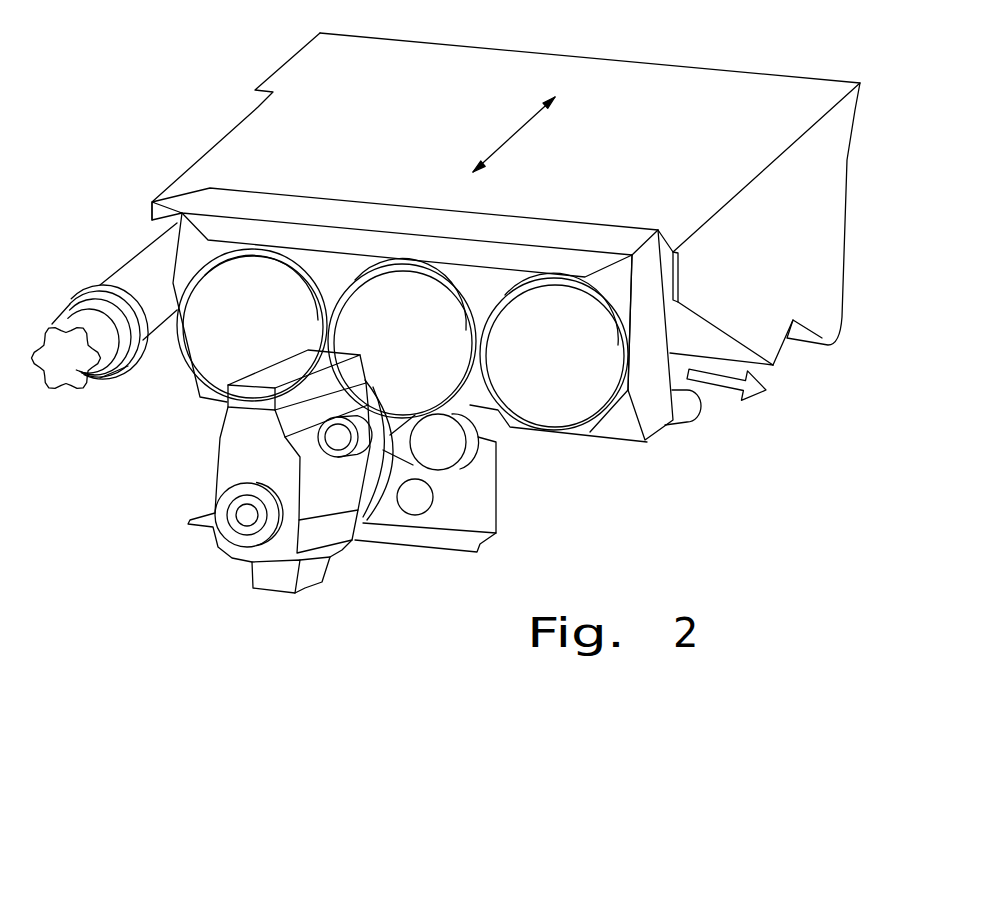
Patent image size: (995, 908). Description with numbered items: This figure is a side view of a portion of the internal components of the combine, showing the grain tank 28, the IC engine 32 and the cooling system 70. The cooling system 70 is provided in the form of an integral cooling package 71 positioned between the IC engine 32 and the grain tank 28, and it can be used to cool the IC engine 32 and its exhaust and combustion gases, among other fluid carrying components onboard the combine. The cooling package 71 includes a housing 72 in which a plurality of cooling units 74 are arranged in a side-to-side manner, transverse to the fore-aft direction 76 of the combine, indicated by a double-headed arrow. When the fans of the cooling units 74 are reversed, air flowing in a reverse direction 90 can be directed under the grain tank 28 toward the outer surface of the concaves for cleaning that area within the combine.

The grain tank 28 is at (768, 87).
The IC engine 32 is at (345, 553).
The cooling system 70 is at (645, 441).
The integral cooling package 71 is at (630, 322).
The housing 72 is at (210, 203).
The cooling unit 74 is at (228, 338).
The fore-aft direction 76 is at (517, 133).
The reverse direction 90 is at (723, 391).